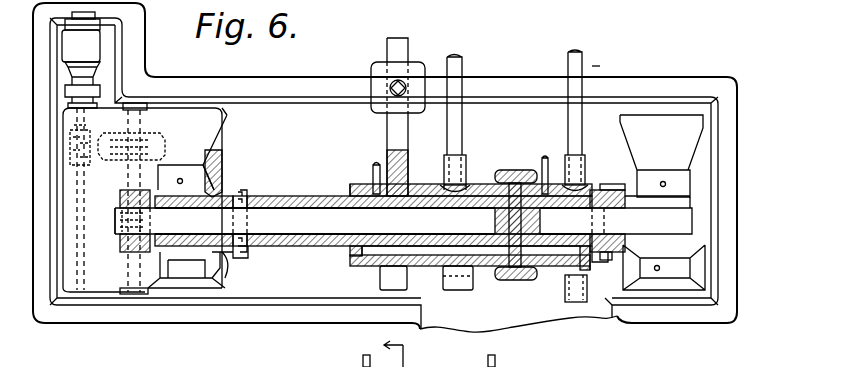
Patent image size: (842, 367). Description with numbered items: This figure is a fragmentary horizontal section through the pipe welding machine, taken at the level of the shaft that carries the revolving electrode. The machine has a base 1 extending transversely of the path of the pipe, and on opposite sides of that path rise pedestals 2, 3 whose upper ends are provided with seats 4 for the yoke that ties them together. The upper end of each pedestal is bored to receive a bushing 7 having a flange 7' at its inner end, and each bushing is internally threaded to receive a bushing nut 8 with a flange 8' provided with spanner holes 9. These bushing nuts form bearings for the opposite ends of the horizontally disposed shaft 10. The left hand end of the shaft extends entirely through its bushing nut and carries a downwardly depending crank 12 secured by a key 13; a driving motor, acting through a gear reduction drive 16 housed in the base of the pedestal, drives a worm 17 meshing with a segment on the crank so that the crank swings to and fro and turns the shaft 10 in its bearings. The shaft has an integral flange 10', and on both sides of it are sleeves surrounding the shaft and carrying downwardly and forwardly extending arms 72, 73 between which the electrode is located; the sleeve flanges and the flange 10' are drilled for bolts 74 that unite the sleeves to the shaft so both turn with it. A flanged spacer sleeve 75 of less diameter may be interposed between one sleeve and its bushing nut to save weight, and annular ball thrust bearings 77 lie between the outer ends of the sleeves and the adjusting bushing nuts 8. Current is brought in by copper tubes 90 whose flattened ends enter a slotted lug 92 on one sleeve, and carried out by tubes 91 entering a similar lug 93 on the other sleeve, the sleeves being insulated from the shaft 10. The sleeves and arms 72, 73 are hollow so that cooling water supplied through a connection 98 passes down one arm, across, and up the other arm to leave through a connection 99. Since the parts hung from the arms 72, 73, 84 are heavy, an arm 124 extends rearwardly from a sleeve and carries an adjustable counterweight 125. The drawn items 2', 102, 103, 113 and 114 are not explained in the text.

The base 1 is at (321, 206).
The pedestal 2 is at (157, 200).
The motor casing flange 2' is at (230, 169).
The pedestal 3 is at (705, 265).
The seat 4 is at (428, 268).
The bushing 7 is at (453, 256).
The flange 7' is at (661, 156).
The bushing nut 8 is at (485, 274).
The flange 8' is at (429, 210).
The spanner holes 9 is at (224, 174).
The shaft 10 is at (403, 221).
The flange 10' is at (517, 197).
The crank 12 is at (130, 190).
The key 13 is at (120, 205).
The gear reduction drive 16 is at (113, 153).
The worm 17 is at (116, 250).
The arm 72 is at (465, 283).
The arm 73 is at (575, 303).
The bolts 74 is at (538, 274).
The spacer sleeve 75 is at (296, 247).
The ball thrust bearings 77 is at (246, 250).
The arm 84 is at (380, 283).
The copper tubes 90 is at (462, 56).
The copper tubes 91 is at (585, 60).
The lug 92 is at (467, 166).
The lug 93 is at (592, 160).
The connection 98 is at (372, 170).
The connection 99 is at (549, 160).
The bracket 102 is at (408, 354).
The terminal 103 is at (365, 356).
The terminal 113 is at (500, 348).
The terminal 114 is at (460, 361).
The arm 124 is at (403, 146).
The counterweight 125 is at (404, 62).